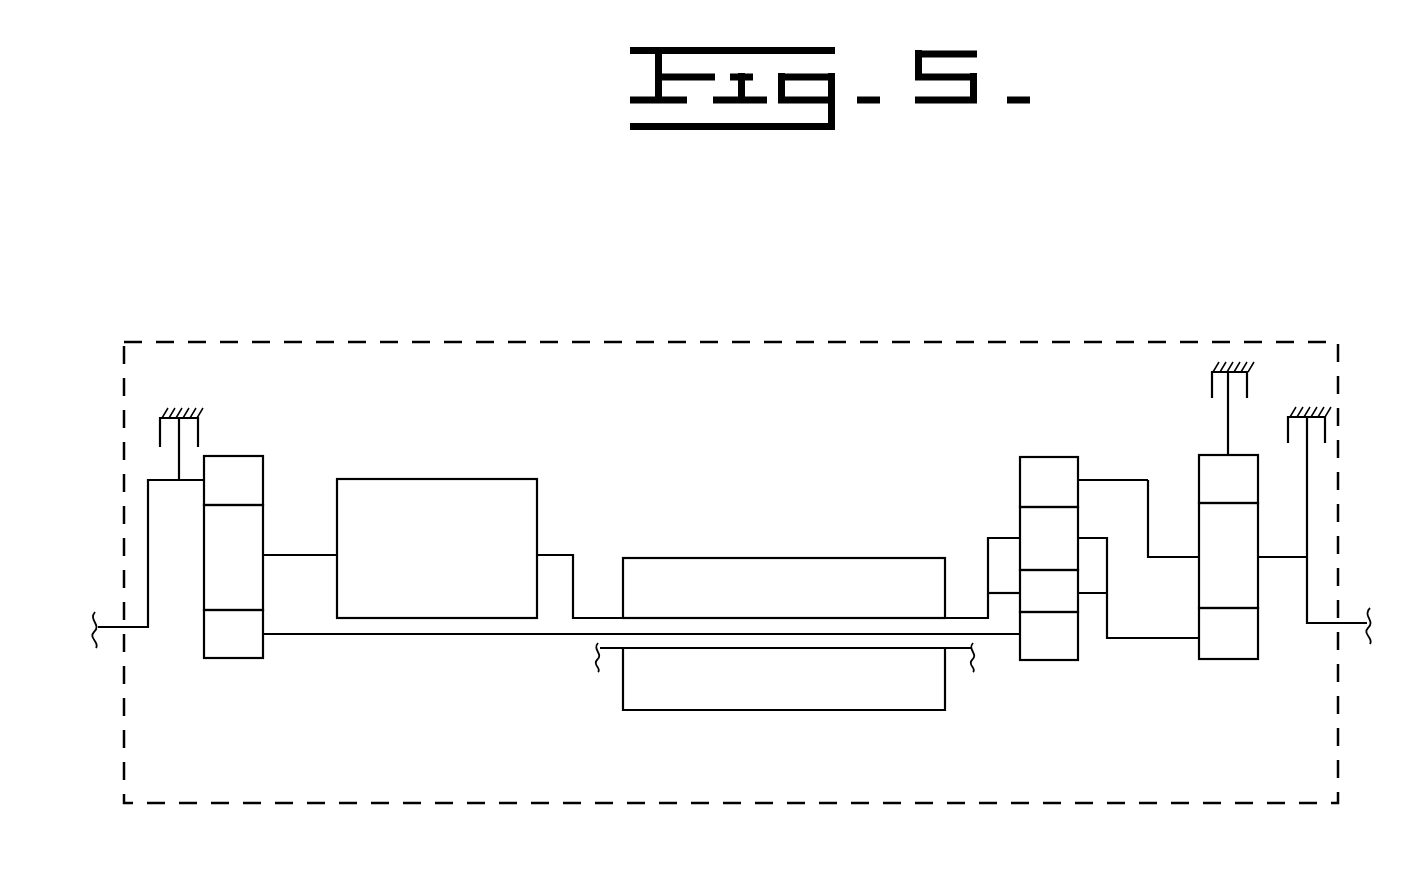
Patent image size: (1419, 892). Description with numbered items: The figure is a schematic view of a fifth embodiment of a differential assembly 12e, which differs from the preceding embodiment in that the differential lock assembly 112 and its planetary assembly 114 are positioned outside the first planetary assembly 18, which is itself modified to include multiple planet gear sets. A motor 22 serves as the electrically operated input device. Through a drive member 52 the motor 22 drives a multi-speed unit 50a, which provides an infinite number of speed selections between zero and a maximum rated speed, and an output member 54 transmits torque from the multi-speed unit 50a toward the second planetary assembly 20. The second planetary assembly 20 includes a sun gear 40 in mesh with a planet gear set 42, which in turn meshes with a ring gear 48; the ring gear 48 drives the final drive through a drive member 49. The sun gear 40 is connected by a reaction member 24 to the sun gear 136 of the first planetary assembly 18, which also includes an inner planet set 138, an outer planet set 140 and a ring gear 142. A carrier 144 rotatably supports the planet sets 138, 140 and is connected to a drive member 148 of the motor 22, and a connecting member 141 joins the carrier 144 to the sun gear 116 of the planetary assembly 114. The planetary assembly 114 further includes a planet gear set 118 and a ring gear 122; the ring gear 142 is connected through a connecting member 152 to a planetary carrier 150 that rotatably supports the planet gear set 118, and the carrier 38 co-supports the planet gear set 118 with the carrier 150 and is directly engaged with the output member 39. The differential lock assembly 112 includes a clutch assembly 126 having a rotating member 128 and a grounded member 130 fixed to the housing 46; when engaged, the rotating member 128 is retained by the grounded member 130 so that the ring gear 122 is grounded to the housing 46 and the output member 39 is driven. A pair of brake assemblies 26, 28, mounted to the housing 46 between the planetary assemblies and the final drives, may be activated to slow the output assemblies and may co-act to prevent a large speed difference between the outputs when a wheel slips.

The differential assembly 12e is at (710, 339).
The second planetary assembly 20 is at (253, 533).
The brake assembly 28 is at (156, 426).
The drive member 49 is at (148, 572).
The ring gear 48 is at (250, 494).
The planet gear set 42 is at (250, 570).
The sun gear 40 is at (250, 647).
The output member 54 is at (322, 555).
The multi-speed unit 50a is at (410, 474).
The drive member 52 is at (575, 582).
The motor 22 is at (715, 558).
The reaction member 24 is at (440, 636).
The drive member 148 is at (964, 617).
The first carrier 144 is at (986, 550).
The first planetary assembly 18 is at (1032, 546).
The ring gear 142 is at (1071, 496).
The outer planet set 140 is at (1071, 552).
The inner planet set 138 is at (1071, 604).
The sun gear 136 is at (1071, 649).
The connecting member 152 is at (1112, 480).
The planetary carrier 150 is at (1196, 555).
The connecting member 141 is at (1166, 639).
The planetary assembly 114 is at (1234, 563).
The clutch assembly 126 is at (1201, 441).
The ring gear 122 is at (1250, 493).
The planet gear set 118 is at (1250, 570).
The sun gear 116 is at (1250, 647).
The differential lock assembly 112 is at (1229, 344).
The rotating member 128 is at (1230, 408).
The housing 46 is at (1226, 366).
The grounded member 130 is at (1211, 390).
The brake assembly 26 is at (1334, 424).
The output member 39 is at (1308, 573).
The carrier 38 is at (1259, 558).